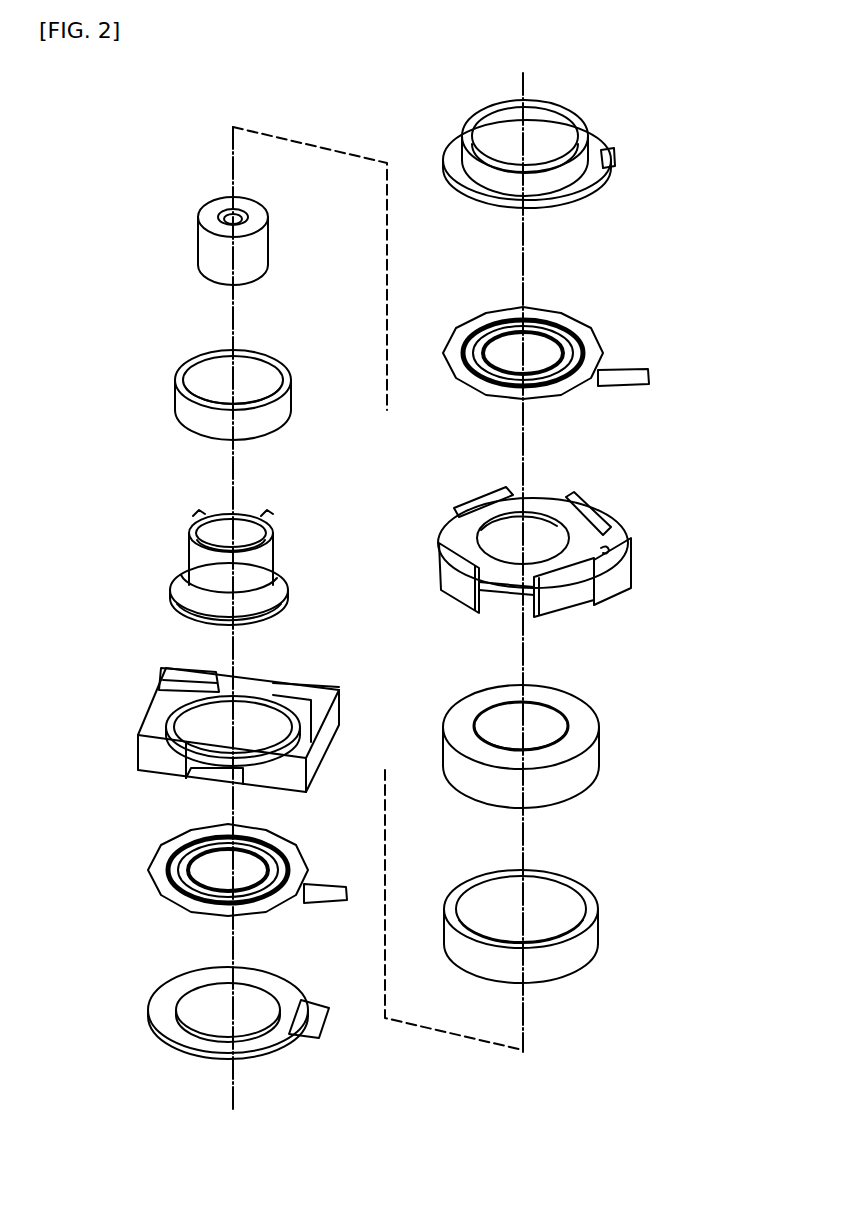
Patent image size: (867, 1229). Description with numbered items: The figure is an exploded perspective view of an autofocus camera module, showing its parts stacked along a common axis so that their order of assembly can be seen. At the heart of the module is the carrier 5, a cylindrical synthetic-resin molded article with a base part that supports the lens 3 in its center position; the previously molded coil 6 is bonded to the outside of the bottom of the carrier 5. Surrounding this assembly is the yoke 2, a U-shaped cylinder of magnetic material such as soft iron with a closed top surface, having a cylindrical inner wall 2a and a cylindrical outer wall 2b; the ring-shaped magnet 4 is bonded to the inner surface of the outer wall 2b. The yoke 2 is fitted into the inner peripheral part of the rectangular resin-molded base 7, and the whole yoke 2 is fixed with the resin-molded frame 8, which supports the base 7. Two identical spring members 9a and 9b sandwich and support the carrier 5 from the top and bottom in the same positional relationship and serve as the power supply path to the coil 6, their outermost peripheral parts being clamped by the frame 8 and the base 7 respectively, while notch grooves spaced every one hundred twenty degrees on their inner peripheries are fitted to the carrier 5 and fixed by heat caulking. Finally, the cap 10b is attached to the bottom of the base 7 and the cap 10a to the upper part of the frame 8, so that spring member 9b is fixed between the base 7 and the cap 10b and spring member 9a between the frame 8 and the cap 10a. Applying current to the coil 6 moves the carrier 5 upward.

The yoke 2 is at (586, 720).
The inner wall 2a is at (545, 720).
The outer wall 2b is at (590, 767).
The lens 3 is at (203, 240).
The magnet 4 is at (588, 945).
The carrier 5 is at (190, 558).
The coil 6 is at (190, 402).
The base 7 is at (158, 713).
The frame 8 is at (585, 522).
The spring member 9a is at (600, 350).
The spring member 9b is at (158, 856).
The cap 10a is at (600, 172).
The cap 10b is at (157, 1000).